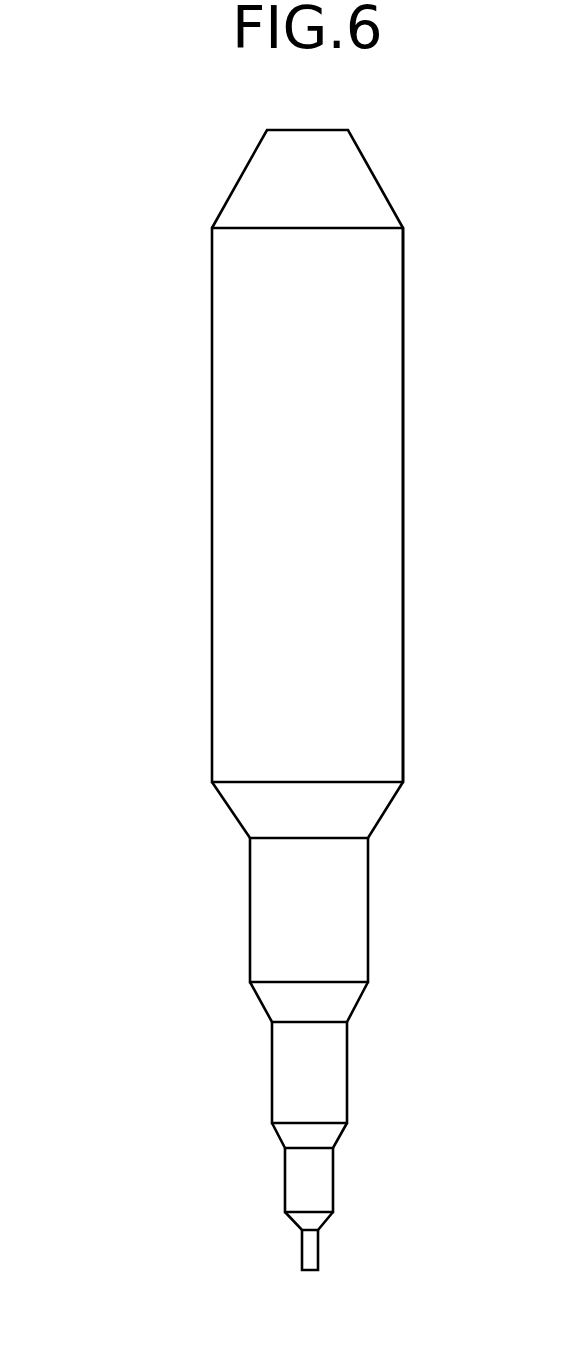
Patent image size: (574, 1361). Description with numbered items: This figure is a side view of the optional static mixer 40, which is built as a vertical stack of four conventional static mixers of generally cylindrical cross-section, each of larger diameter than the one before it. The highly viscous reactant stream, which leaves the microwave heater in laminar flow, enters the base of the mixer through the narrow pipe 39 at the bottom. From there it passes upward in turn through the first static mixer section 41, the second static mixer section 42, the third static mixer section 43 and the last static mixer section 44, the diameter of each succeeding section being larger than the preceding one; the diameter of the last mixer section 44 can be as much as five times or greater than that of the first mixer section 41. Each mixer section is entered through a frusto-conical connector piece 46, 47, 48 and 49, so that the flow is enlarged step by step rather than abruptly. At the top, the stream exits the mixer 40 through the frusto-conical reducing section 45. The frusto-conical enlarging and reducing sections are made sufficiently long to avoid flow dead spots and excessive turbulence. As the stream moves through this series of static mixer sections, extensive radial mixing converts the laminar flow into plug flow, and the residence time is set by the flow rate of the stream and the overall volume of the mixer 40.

The pipe 39 is at (315, 1272).
The optional static mixer 40 is at (183, 450).
The first static mixer section 41 is at (322, 1195).
The second static mixer section 42 is at (323, 1082).
The third static mixer section 43 is at (343, 920).
The last static mixer section 44 is at (403, 502).
The frusto-conical reducing section 45 is at (375, 168).
The frusto-conical connector piece 46 is at (308, 1218).
The frusto-conical connector piece 47 is at (288, 1133).
The frusto-conical connector piece 48 is at (275, 997).
The frusto-conical connector piece 49 is at (242, 805).